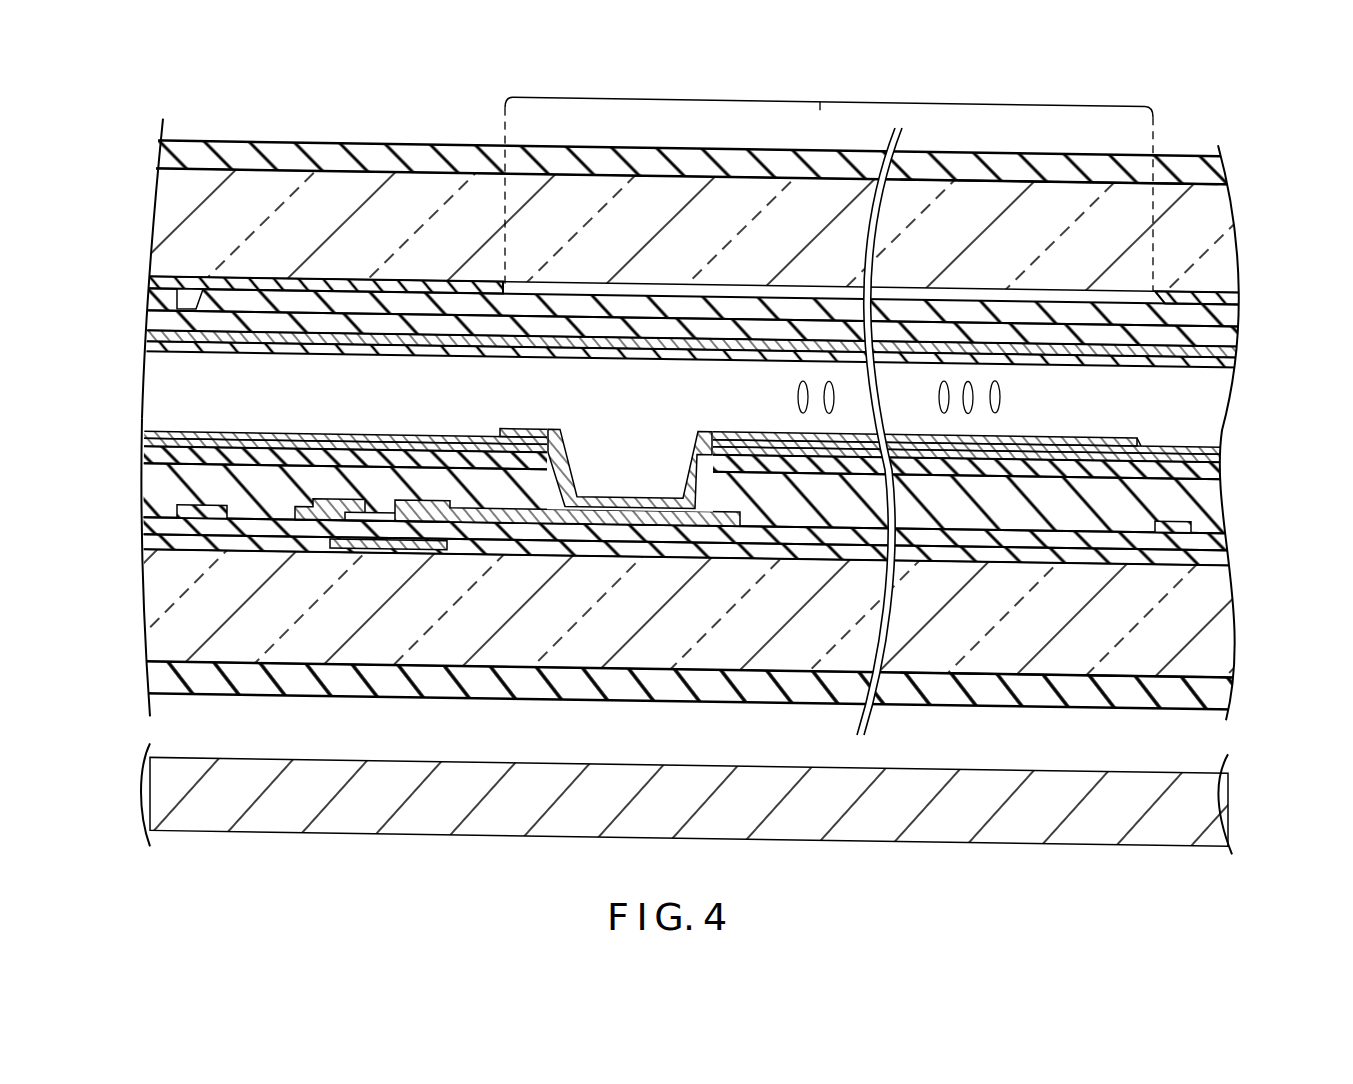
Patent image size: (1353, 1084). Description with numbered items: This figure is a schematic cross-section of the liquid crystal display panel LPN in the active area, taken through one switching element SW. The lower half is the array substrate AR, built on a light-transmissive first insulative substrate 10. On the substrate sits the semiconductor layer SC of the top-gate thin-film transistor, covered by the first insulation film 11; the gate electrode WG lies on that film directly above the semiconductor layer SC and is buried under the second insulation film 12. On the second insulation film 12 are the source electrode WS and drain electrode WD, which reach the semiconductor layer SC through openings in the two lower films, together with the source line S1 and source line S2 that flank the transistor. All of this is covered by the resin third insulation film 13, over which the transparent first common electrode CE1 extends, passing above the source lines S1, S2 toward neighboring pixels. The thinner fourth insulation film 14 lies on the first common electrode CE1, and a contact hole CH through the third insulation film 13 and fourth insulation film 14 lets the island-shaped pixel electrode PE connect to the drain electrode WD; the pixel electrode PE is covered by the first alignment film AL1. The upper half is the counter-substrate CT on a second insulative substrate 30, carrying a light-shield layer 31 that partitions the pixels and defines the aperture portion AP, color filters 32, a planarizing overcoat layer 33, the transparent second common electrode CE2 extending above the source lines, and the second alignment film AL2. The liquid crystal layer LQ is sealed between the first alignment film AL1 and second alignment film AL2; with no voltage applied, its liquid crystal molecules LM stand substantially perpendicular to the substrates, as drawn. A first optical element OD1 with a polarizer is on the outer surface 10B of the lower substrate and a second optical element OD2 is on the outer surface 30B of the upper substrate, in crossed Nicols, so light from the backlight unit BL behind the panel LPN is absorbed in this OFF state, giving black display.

The second insulative substrate 30 is at (170, 222).
The outer surface of the second insulative substrate 30B is at (1188, 174).
The light-shield layer 31 is at (178, 287).
The color filters 32 is at (178, 302).
The overcoat layer 33 is at (180, 325).
The second common electrode CE2 is at (1158, 350).
The second alignment film AL2 is at (180, 350).
The liquid crystal layer LQ is at (168, 392).
The liquid crystal molecules LM is at (1000, 397).
The first alignment film AL1 is at (180, 433).
The fourth insulation film 14 is at (175, 444).
The first common electrode CE1 is at (1150, 465).
The pixel electrode PE is at (700, 432).
The contact hole CH is at (634, 470).
The third insulation film 13 is at (175, 485).
The second insulation film 12 is at (178, 522).
The first insulation film 11 is at (178, 542).
The first insulative substrate 10 is at (168, 638).
The outer surface of the first insulative substrate 10B is at (1175, 682).
The source line S1 is at (200, 556).
The source line S2 is at (1172, 519).
The switching element SW is at (355, 562).
The semiconductor layer SC is at (387, 553).
The gate electrode WG is at (432, 553).
The source electrode WS is at (325, 500).
The drain electrode WD is at (455, 497).
The first optical element OD1 is at (1215, 693).
The second optical element OD2 is at (1216, 165).
The backlight unit BL is at (1218, 835).
The aperture portion AP is at (829, 180).
The liquid crystal display panel LPN is at (1238, 222).
The counter-substrate CT is at (1218, 270).
The array substrate AR is at (1242, 612).